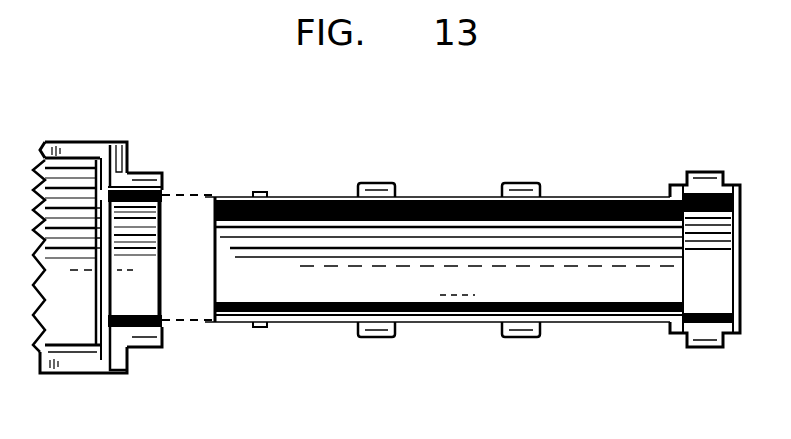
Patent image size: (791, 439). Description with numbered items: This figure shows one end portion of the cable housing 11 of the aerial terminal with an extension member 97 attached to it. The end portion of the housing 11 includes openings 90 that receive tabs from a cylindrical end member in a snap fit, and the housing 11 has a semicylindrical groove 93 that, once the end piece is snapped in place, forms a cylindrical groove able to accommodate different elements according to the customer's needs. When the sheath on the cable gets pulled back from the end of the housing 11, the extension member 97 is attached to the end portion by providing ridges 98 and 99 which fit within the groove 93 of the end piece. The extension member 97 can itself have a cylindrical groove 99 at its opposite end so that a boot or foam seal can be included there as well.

The cable housing 11 is at (60, 148).
The openings 90 is at (147, 176).
The groove 93 is at (137, 270).
The extension member 97 is at (452, 197).
The ridge 98 is at (215, 194).
The ridge / cylindrical groove 99 is at (257, 323).